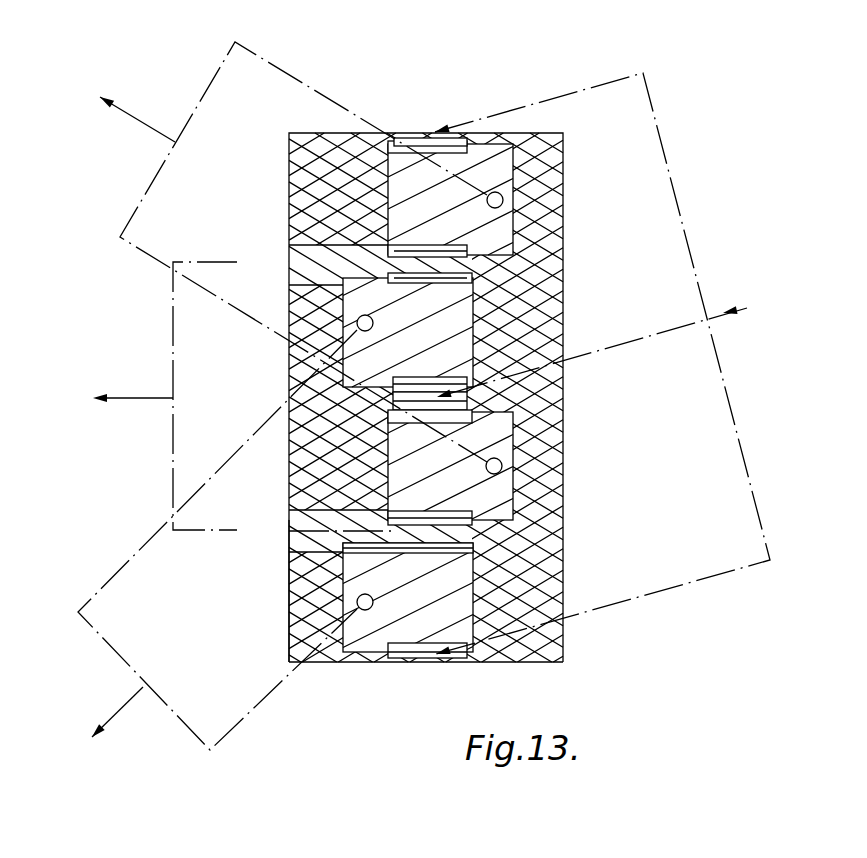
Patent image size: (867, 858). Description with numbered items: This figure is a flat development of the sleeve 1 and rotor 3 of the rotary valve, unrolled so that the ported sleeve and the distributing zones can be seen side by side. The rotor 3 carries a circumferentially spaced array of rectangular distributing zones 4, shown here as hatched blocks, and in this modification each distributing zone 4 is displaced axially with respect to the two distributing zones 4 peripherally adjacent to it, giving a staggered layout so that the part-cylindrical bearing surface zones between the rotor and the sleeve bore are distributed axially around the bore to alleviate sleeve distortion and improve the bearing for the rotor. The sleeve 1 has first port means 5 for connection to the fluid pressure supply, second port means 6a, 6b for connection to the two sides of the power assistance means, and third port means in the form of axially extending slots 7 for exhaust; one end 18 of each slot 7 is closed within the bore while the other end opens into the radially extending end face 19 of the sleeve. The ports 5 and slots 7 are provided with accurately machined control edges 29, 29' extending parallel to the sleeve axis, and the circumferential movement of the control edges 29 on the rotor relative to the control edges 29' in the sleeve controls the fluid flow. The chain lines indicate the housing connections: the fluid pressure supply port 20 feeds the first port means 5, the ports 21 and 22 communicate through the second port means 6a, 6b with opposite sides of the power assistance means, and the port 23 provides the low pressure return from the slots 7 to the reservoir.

The sleeve 1 is at (289, 188).
The rotor 3 is at (437, 431).
The distributing zones 4 is at (503, 252).
The first port means 5 is at (431, 131).
The second port means 6a is at (368, 333).
The second port means 6b is at (507, 191).
The axially extending slots 7 is at (306, 247).
The closed end of slot 18 is at (463, 261).
The radially extending end face 19 is at (289, 600).
The fluid pressure supply port 20 is at (672, 331).
The port 21 is at (132, 702).
The port 22 is at (130, 122).
The port 23 is at (135, 402).
The control edges 29 is at (408, 358).
The control edges 29' is at (400, 357).